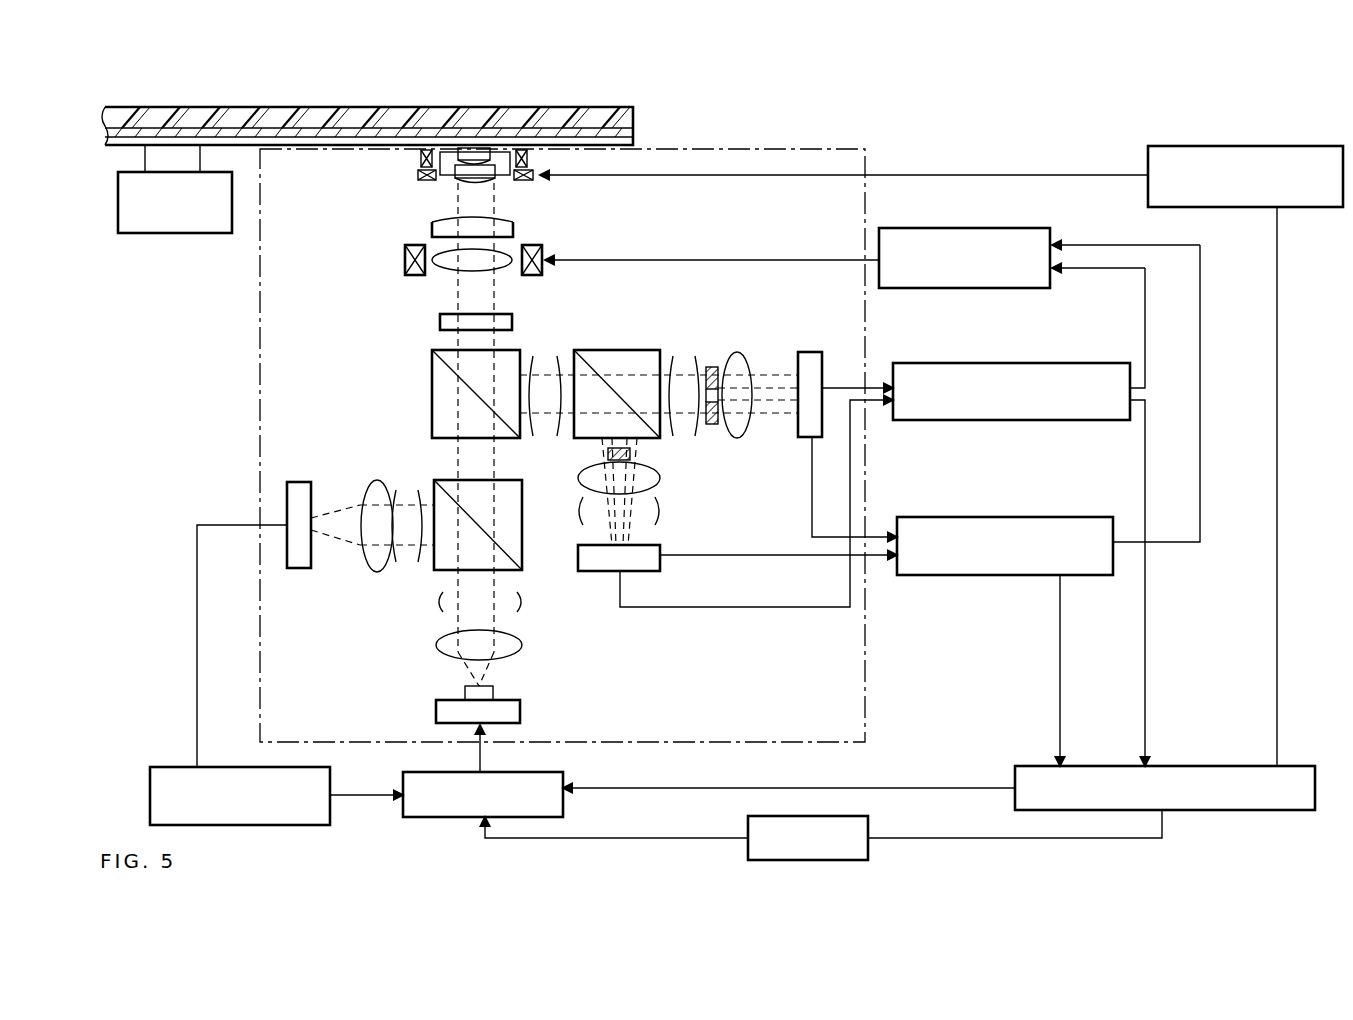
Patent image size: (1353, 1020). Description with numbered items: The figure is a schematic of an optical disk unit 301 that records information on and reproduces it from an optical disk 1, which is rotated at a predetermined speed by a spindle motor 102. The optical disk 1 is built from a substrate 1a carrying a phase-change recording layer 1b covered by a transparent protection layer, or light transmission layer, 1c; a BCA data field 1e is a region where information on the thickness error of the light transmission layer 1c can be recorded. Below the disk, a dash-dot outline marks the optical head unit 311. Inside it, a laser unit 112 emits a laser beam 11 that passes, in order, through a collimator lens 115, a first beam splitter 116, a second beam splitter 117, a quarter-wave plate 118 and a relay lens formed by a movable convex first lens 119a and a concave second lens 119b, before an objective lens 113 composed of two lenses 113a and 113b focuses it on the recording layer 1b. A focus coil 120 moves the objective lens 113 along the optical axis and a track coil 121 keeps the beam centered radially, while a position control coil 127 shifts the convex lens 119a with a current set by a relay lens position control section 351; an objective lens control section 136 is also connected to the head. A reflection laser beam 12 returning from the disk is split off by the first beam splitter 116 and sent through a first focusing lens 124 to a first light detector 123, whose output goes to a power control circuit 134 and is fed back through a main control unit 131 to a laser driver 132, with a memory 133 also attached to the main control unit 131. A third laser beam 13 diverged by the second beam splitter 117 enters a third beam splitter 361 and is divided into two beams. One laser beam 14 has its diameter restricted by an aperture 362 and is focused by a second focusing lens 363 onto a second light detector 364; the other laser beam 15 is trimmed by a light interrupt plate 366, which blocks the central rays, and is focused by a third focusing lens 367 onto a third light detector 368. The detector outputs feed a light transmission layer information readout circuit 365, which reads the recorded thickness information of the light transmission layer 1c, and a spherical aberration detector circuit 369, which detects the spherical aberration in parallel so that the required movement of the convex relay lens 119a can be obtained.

The optical disk 1 is at (285, 107).
The substrate 1a is at (222, 145).
The recording layer 1b is at (422, 107).
The transparent protection layer (light transmission layer) 1c is at (356, 147).
The BCA data field 1e is at (220, 145).
The spindle motor 102 is at (176, 236).
The optical head 311 is at (866, 695).
The optical disk unit 301 is at (917, 158).
The objective lens 113 is at (598, 150).
The lens 113a is at (526, 157).
The lens 113b is at (522, 177).
The focus coil 120 is at (421, 159).
The track coil 121 is at (429, 180).
The second lens of relay lens 119b is at (515, 229).
The first lens of relay lens 119a is at (503, 268).
The position control coil 127 is at (404, 259).
The λ/4 waveform plate 118 is at (440, 322).
The second beam splitter 117 is at (432, 384).
The third laser beam 13 is at (548, 432).
The third beam splitter 361 is at (632, 350).
The laser beam 14 is at (696, 422).
The aperture 362 is at (712, 366).
The second focusing lens 363 is at (748, 424).
The second light detector 364 is at (810, 352).
The light interrupt plate 366 is at (632, 455).
The third focusing lens 367 is at (660, 482).
The laser beam 15 is at (656, 518).
The third light detector 368 is at (645, 572).
The first beam splitter 116 is at (522, 525).
The reflection laser beam 12 is at (405, 487).
The first focusing lens 124 is at (378, 572).
The first light detector 123 is at (300, 570).
The laser beam 11 is at (522, 602).
The collimator lens 115 is at (522, 648).
The laser unit 112 is at (522, 707).
The objective lens control section 136 is at (1252, 146).
The relay lens position control section 351 is at (980, 228).
The light transmission layer information readout circuit 365 is at (1040, 363).
The spherical aberration detector circuit 369 is at (997, 517).
The main control unit 131 is at (1218, 766).
The memory 133 is at (870, 828).
The laser driver 132 is at (563, 775).
The power control circuit 134 is at (330, 775).